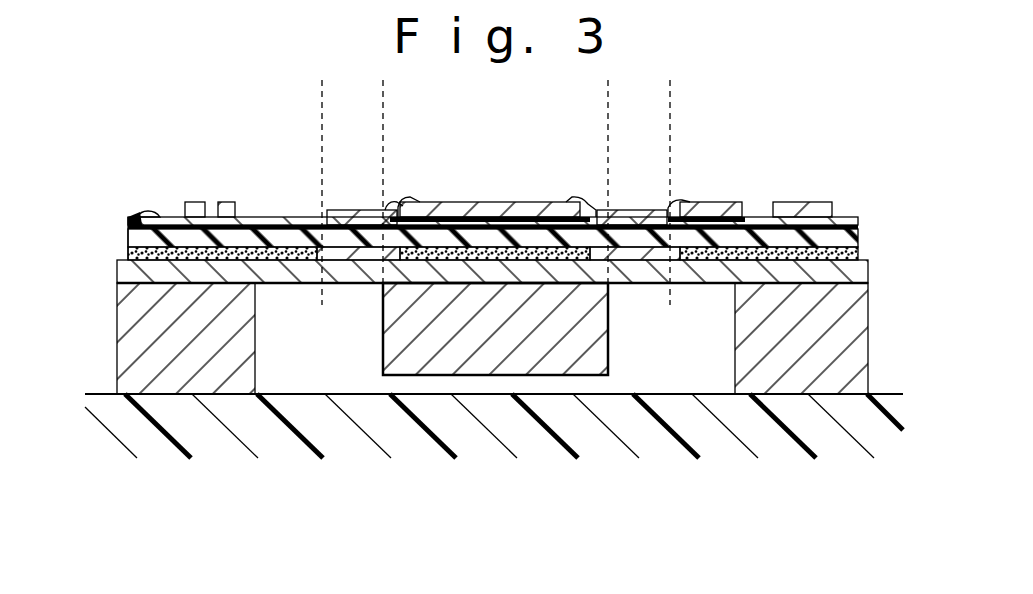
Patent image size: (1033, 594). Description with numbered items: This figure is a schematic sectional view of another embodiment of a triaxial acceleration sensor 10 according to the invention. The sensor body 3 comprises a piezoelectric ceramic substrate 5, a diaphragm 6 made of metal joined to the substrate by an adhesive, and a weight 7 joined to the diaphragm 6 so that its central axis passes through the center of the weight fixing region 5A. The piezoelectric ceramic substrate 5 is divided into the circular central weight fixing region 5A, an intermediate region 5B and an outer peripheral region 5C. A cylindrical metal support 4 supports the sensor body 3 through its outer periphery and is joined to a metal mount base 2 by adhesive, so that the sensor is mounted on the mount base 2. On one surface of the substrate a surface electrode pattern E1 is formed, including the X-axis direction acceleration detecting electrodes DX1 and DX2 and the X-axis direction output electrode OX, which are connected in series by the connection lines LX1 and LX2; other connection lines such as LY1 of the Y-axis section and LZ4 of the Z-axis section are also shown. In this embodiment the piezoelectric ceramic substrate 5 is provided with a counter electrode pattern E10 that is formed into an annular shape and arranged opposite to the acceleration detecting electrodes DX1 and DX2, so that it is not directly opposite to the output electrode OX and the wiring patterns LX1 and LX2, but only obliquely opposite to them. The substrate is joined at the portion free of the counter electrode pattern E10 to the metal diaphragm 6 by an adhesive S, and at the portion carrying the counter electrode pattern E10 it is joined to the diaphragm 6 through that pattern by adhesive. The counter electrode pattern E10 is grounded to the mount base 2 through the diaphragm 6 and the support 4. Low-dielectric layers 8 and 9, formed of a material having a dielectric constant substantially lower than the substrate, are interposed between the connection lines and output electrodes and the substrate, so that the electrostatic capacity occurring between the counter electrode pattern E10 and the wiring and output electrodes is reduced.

The mount base 2 is at (700, 432).
The sensor body 3 is at (118, 221).
The support 4 is at (145, 340).
The piezoelectric ceramic substrate 5 is at (860, 238).
The weight fixing region 5A is at (495, 173).
The intermediate region 5B is at (496, 192).
The outer peripheral region 5C is at (493, 173).
The diaphragm 6 is at (845, 273).
The weight 7 is at (572, 347).
The low-dielectric layer 8 is at (508, 217).
The low-dielectric layer 9 is at (147, 213).
The triaxial acceleration sensor 10 is at (810, 184).
The X-axis direction output electrode OX is at (810, 207).
The surface electrode pattern E1 is at (183, 201).
The counter electrode pattern E10 is at (337, 268).
The connection line LY1 is at (195, 202).
The connection line LZ4 is at (227, 202).
The X-axis direction acceleration detecting electrode DX1 is at (352, 210).
The X-axis direction acceleration detecting electrode DX2 is at (625, 210).
The connection line LX1 is at (462, 202).
The connection line LX2 is at (712, 202).
The adhesive S is at (273, 258).